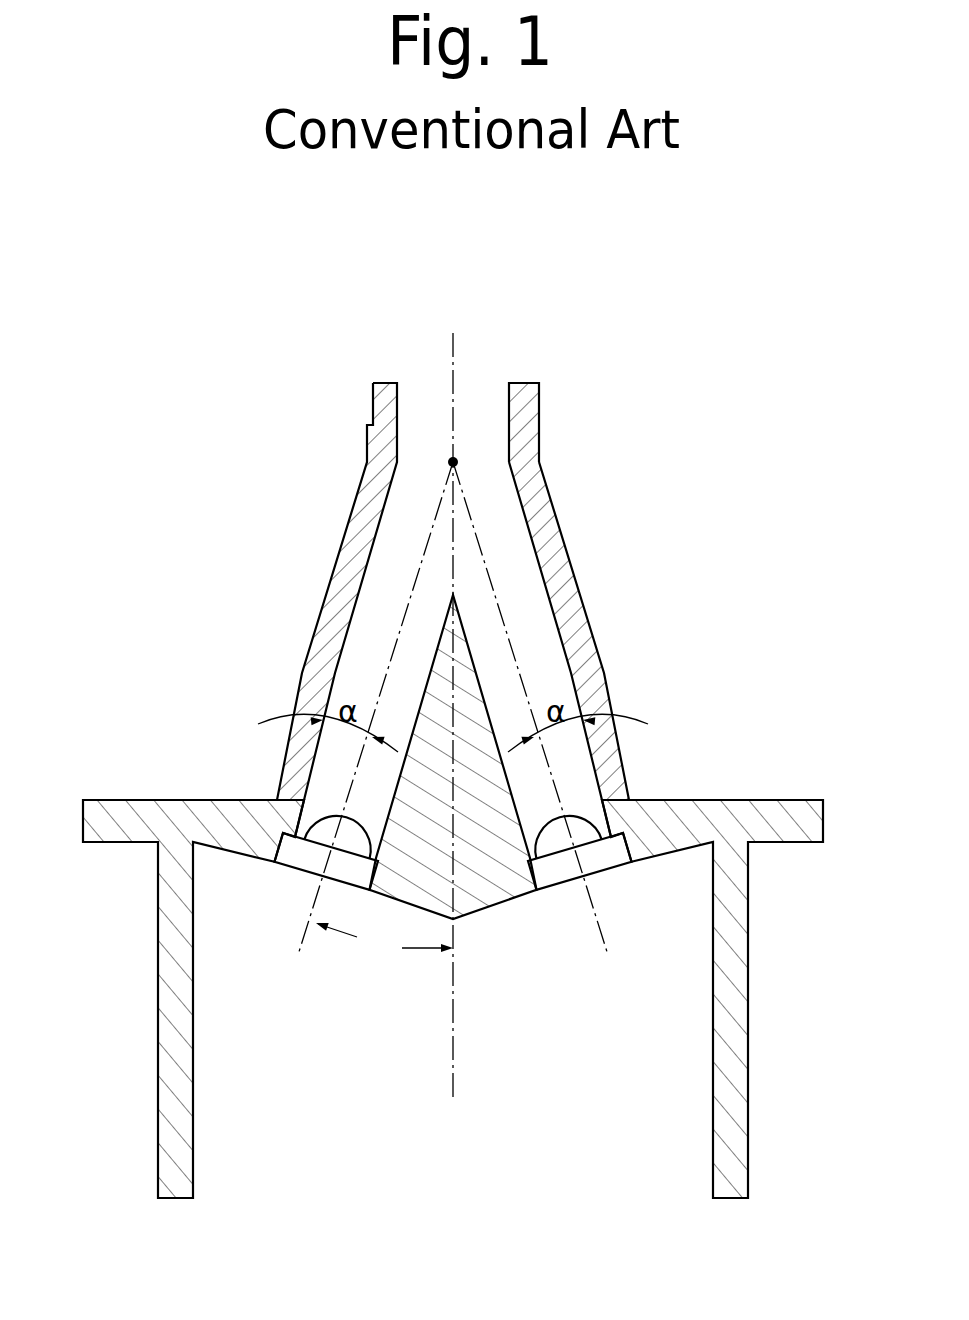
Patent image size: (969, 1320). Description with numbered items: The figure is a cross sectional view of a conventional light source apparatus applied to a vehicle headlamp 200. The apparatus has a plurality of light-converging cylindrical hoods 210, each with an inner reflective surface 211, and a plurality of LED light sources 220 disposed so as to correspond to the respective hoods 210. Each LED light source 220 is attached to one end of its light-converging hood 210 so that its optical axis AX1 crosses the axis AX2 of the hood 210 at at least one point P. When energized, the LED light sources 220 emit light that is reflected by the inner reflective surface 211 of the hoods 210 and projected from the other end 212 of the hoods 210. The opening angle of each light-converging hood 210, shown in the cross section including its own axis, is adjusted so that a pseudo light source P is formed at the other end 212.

The vehicle headlamp 200 is at (435, 305).
The light-converging cylindrical hood 210 is at (338, 583).
The inner reflective surface 211 is at (334, 671).
The other end of the light-converging hood 212 is at (510, 383).
The LED light source 220 is at (297, 862).
The pseudo light source P is at (448, 462).
The optical axis of the LED light source AX1 is at (457, 743).
The axis of the light-converging hood AX2 is at (443, 736).